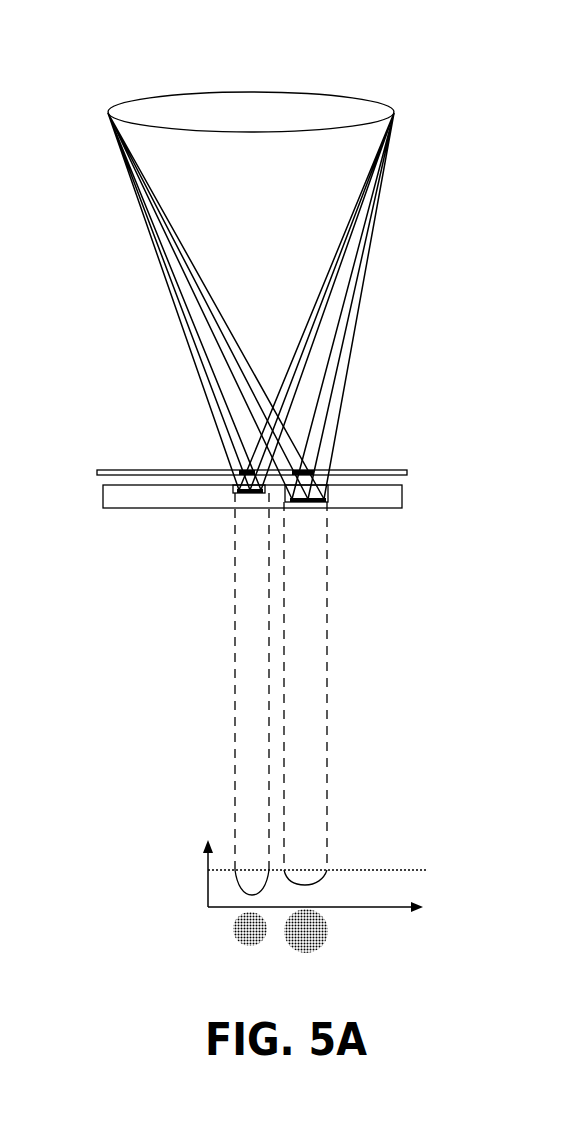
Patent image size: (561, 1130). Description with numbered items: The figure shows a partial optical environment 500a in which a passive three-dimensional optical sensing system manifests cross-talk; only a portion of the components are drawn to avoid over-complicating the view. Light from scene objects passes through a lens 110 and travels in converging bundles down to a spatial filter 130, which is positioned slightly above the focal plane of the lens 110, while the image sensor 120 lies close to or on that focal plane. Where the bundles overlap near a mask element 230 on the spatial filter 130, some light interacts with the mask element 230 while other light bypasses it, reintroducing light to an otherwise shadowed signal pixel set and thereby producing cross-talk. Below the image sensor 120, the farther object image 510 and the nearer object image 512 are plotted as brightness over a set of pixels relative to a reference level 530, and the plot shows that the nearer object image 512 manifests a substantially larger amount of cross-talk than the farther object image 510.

The partial optical environment 500a is at (169, 42).
The lens 110 is at (251, 112).
The spatial filter 130 is at (148, 470).
The image sensor 120 is at (118, 486).
The mask element 230 is at (303, 471).
The farther object image 510 is at (247, 495).
The nearer object image 512 is at (308, 503).
The threshold level 530 is at (385, 869).